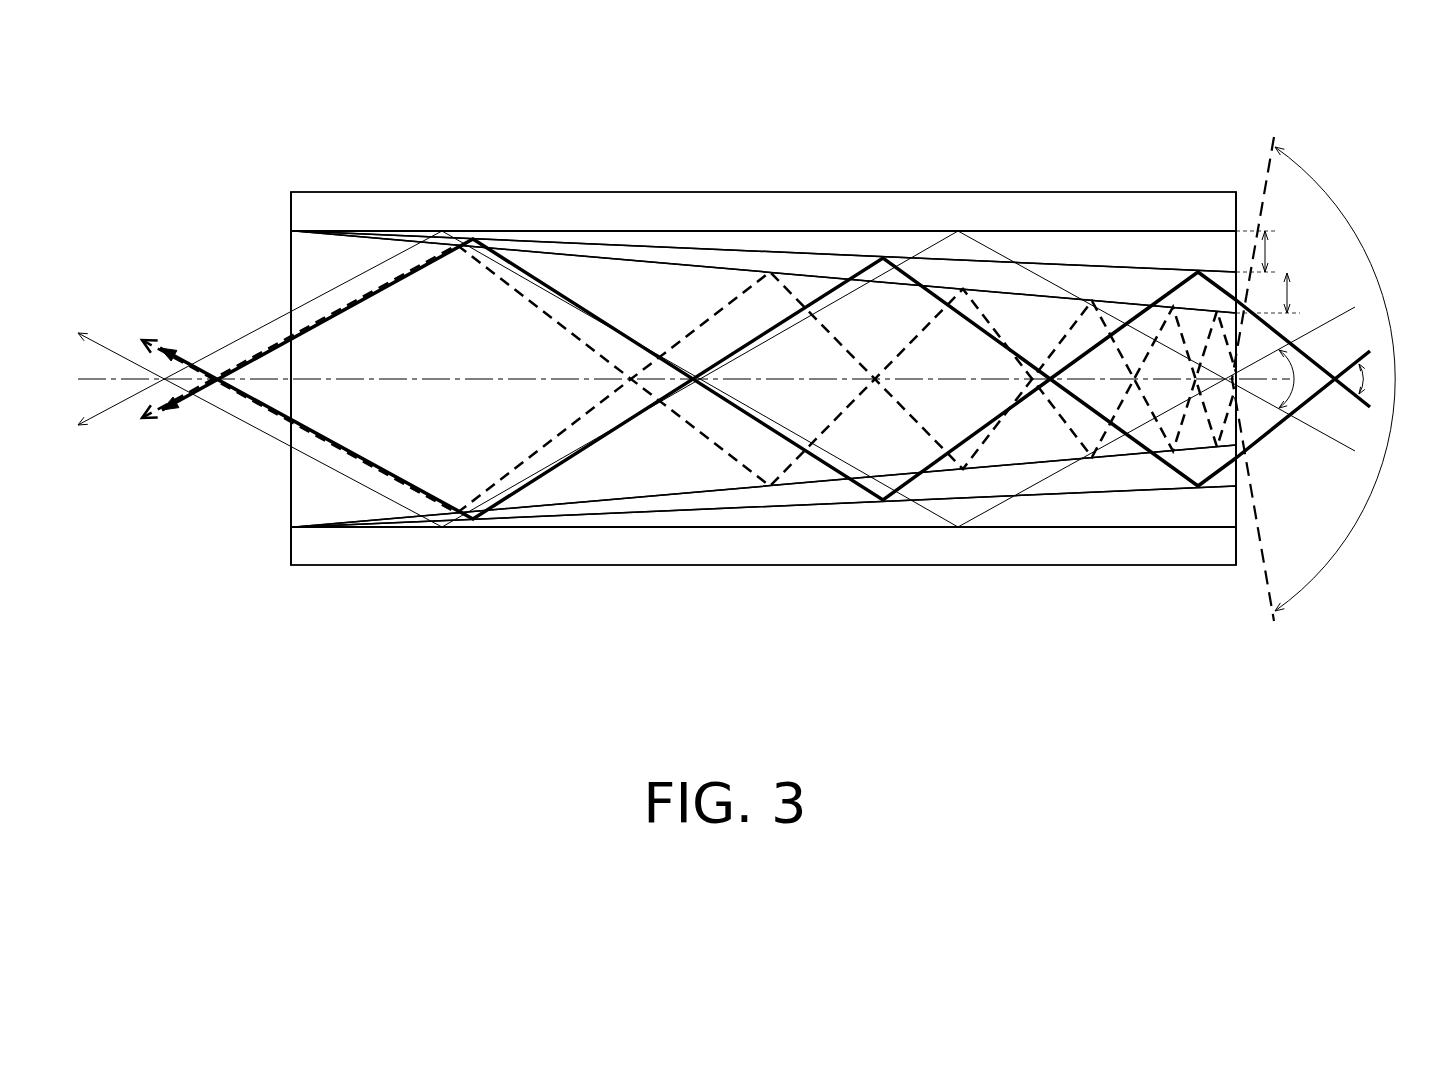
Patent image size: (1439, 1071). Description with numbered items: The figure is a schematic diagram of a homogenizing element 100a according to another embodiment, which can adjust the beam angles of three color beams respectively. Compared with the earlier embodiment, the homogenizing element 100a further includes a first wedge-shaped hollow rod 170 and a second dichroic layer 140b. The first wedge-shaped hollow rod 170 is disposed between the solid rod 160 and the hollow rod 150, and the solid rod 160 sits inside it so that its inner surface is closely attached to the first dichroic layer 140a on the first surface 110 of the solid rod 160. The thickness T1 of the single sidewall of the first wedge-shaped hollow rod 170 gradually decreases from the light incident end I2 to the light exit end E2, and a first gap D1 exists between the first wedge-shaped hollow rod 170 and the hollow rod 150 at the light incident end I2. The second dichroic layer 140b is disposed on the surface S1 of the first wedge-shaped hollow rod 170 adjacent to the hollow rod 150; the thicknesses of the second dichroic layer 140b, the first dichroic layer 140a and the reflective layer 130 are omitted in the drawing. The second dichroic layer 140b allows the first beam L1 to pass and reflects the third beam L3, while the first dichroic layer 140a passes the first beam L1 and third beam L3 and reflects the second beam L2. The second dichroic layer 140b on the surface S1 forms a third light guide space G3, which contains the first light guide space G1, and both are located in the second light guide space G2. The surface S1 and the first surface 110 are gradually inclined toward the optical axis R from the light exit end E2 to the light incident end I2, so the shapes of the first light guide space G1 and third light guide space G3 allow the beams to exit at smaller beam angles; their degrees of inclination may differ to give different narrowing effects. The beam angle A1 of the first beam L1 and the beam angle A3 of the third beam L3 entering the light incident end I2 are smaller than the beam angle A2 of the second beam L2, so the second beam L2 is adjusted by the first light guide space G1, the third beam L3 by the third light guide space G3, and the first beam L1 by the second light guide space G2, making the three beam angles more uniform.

The homogenizing element 100a is at (173, 112).
The first surface 110 is at (690, 265).
The reflective layer 130 is at (1160, 237).
The first dichroic layer 140a is at (1037, 296).
The second dichroic layer 140b is at (1117, 267).
The hollow rod 150 is at (512, 210).
The solid rod 160 is at (707, 470).
The first wedge-shaped hollow rod 170 is at (838, 272).
The surface S1 is at (792, 253).
The first light guide space G1 is at (582, 467).
The second light guide space G2 is at (837, 517).
The third light guide space G3 is at (817, 270).
The light exit end E2 is at (290, 193).
The light incident end I2 is at (1237, 193).
The optical axis R is at (672, 381).
The first beam L1 is at (1340, 316).
The second beam L2 is at (1268, 130).
The third beam L3 is at (1361, 358).
The beam angle A1 is at (1302, 379).
The beam angle A2 is at (1352, 379).
The beam angle A3 is at (1377, 379).
The first gap D1 is at (1268, 251).
The thickness T1 is at (1279, 293).